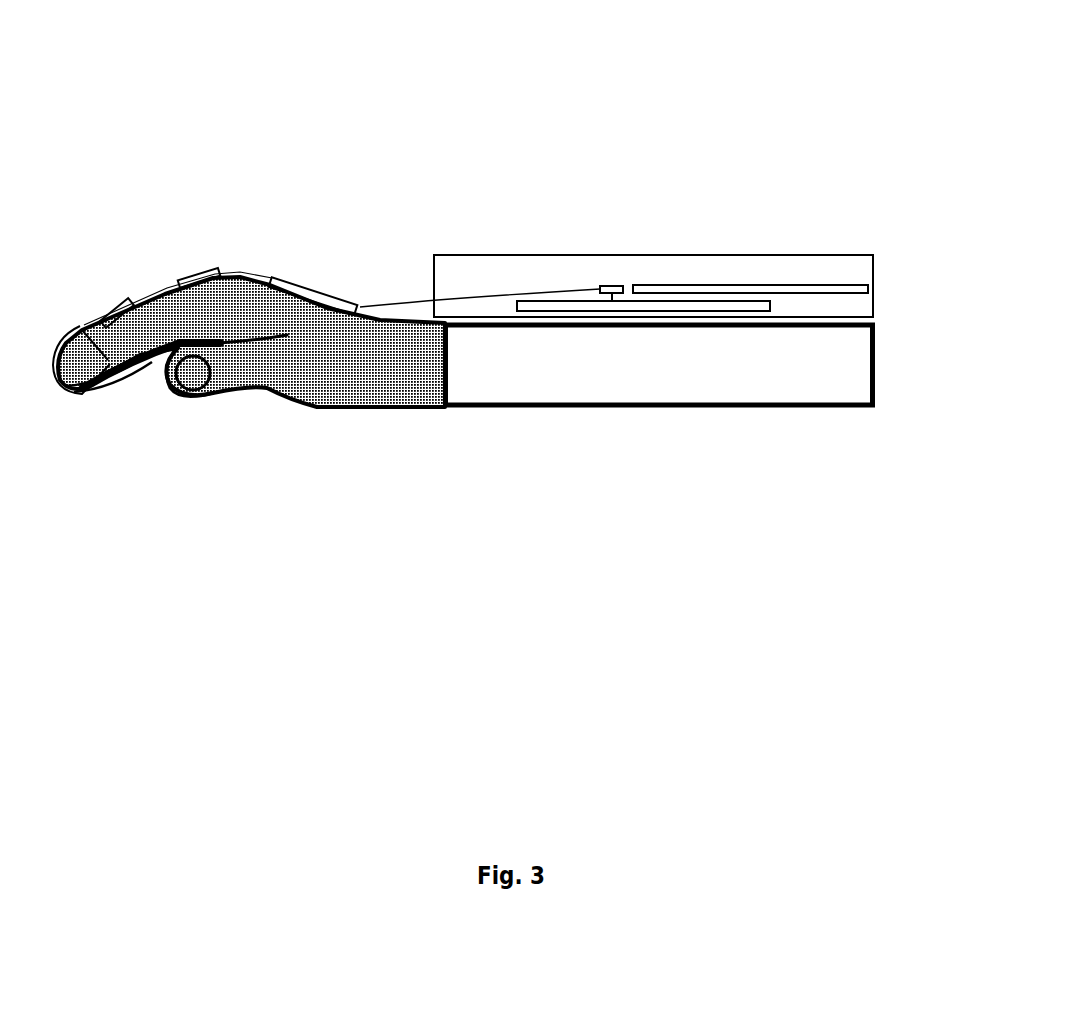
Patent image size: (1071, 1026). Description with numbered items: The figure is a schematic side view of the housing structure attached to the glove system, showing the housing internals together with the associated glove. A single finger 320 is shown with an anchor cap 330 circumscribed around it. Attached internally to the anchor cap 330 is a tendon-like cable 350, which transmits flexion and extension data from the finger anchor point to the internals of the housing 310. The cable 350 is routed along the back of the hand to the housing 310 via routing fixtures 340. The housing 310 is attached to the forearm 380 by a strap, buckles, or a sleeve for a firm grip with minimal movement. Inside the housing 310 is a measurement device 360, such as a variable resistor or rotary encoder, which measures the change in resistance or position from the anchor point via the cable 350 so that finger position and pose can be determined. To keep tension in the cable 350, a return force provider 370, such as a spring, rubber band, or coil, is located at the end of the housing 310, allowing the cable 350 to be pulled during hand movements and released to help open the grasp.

The housing 310 is at (873, 283).
The finger 320 is at (139, 347).
The anchor cap 330 is at (65, 385).
The routing fixtures 340 is at (213, 270).
The tendon-like cable 350 is at (398, 300).
The measurement device 360 is at (612, 287).
The return force provider 370 is at (835, 280).
The forearm 380 is at (658, 422).